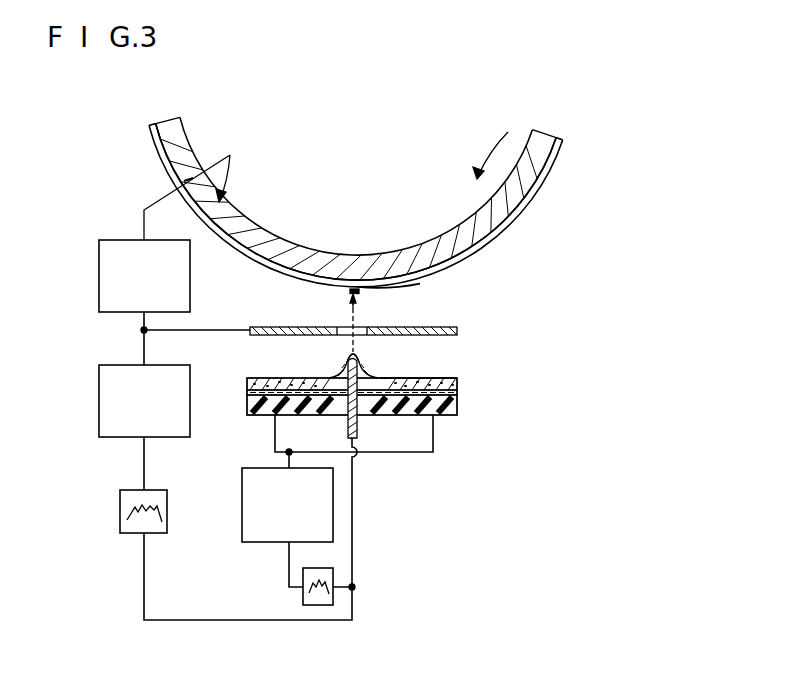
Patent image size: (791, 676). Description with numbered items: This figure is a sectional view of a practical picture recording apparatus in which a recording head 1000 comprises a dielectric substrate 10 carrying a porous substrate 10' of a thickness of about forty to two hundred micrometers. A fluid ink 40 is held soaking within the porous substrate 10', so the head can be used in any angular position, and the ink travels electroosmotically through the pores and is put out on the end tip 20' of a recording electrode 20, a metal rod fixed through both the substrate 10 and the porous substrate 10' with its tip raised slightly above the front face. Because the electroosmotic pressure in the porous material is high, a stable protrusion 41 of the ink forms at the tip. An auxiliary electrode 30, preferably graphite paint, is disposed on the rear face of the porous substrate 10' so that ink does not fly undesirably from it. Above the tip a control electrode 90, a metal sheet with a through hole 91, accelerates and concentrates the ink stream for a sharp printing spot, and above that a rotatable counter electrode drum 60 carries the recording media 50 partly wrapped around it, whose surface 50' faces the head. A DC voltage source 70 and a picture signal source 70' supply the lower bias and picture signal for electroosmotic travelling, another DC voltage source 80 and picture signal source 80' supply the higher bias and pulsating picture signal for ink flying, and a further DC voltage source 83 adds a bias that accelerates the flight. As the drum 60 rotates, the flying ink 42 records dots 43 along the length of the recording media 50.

The dielectric substrate 10 is at (366, 418).
The porous substrate 10' is at (437, 365).
The recording head 1000 is at (538, 409).
The recording electrode 20 is at (371, 402).
The end tip of recording electrode 20' is at (341, 362).
The auxiliary electrode 30 is at (247, 382).
The fluid ink 40 is at (406, 380).
The protrusion of fluid ink 41 is at (361, 368).
The flying ink 42 is at (351, 316).
The dots 43 is at (360, 295).
The recording media 50 is at (376, 205).
The surface of photoconductive layer 50' is at (405, 295).
The counter electrode drum 60 is at (545, 134).
The DC voltage source 70 is at (270, 505).
The picture signal source 70' is at (295, 591).
The DC voltage source 80 is at (124, 401).
The picture signal source 80' is at (123, 511).
The DC voltage source 83 is at (99, 265).
The control electrode 90 is at (457, 331).
The through hole 91 is at (364, 331).